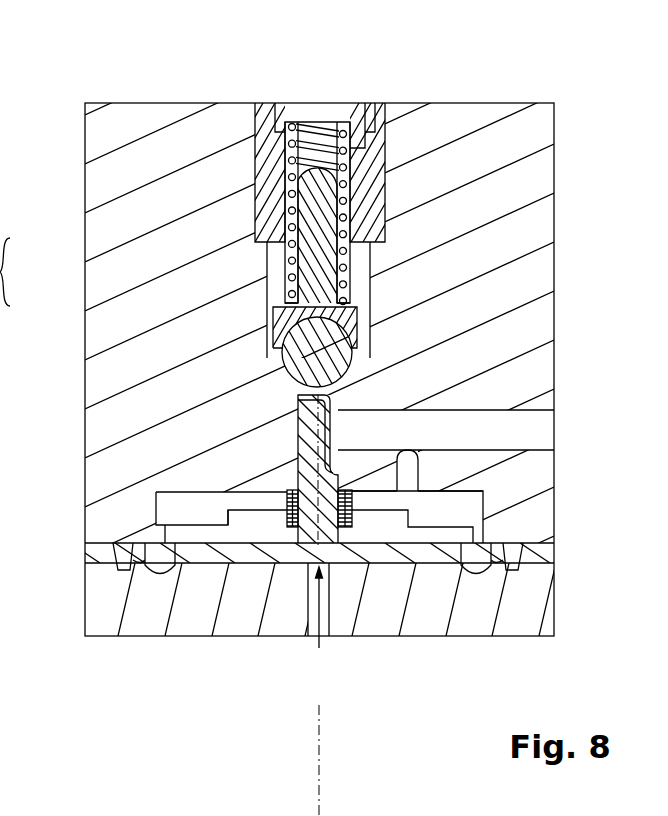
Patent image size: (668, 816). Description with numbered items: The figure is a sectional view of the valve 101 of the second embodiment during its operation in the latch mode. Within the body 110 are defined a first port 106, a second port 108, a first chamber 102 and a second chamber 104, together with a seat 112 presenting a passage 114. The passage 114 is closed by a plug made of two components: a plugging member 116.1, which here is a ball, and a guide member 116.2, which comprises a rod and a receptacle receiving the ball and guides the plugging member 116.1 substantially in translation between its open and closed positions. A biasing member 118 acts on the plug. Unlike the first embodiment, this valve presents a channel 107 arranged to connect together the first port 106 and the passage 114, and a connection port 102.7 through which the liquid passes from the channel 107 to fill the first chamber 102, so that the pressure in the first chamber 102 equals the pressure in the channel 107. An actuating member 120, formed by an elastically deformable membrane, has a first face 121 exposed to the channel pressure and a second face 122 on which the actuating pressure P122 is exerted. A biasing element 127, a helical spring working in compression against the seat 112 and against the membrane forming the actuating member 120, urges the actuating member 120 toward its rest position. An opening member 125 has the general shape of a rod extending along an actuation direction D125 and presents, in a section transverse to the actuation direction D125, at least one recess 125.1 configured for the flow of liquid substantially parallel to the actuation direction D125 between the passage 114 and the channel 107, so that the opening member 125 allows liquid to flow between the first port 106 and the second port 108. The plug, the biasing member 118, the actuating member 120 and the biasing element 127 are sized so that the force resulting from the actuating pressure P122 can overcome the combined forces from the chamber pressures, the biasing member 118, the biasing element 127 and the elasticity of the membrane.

The valve 101 is at (557, 99).
The body 110 is at (517, 136).
The second port 108 is at (321, 103).
The biasing member 118 is at (290, 225).
The guide member 116.2 is at (288, 272).
The plugging member 116.1 is at (288, 293).
The second chamber 104 is at (351, 291).
The seat 112 is at (356, 373).
The passage 114 is at (337, 392).
The opening member 125 is at (303, 432).
The channel 107 is at (484, 419).
The first port 106 is at (541, 432).
The recess 125.1 is at (417, 470).
The connection port 102.7 is at (343, 455).
The first chamber 102 is at (484, 517).
The first face 121 is at (199, 527).
The actuating member 120 is at (500, 545).
The biasing element 127 is at (248, 512).
The second face 122 is at (410, 566).
The actuating pressure P122 is at (322, 636).
The actuation direction D125 is at (349, 760).